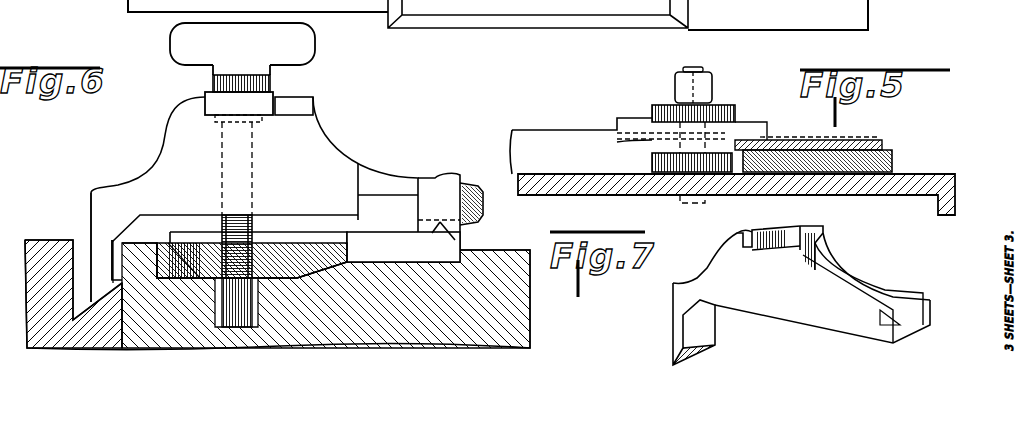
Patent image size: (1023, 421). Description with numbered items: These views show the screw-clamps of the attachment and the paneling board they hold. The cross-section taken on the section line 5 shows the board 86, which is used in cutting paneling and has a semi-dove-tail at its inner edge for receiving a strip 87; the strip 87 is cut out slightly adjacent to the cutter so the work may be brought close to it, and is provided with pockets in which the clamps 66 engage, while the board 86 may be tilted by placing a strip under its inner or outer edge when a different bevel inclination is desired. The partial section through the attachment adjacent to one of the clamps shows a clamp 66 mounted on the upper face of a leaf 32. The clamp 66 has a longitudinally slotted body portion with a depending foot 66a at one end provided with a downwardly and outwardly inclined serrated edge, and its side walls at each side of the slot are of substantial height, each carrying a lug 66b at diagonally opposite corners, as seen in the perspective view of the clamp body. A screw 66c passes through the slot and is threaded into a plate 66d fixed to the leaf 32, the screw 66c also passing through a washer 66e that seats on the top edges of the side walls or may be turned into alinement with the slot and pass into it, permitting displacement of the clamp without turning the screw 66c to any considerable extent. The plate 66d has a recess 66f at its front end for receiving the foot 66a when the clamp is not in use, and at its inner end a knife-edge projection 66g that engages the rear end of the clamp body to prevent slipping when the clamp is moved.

In FIG. 6, the section line 5 is at (497, 38).
In FIG. 6, the leaf 32 is at (507, 301).
In FIG. 6, the clamp 66 is at (313, 163).
In FIG. 7, the clamp 66 is at (787, 290).
In FIG. 6, the foot 66a is at (103, 223).
In FIG. 7, the foot 66a is at (683, 333).
In FIG. 6, the lug 66b is at (302, 108).
In FIG. 7, the lug 66b is at (818, 243).
In FIG. 6, the screw 66c is at (285, 45).
In FIG. 6, the plate 66d is at (362, 247).
In FIG. 6, the washer 66e is at (258, 105).
In FIG. 6, the recess 66f is at (182, 243).
In FIG. 6, the knife-edge projection 66g is at (455, 233).
In FIG. 5, the board 86 is at (893, 158).
In FIG. 5, the strip 87 is at (790, 146).